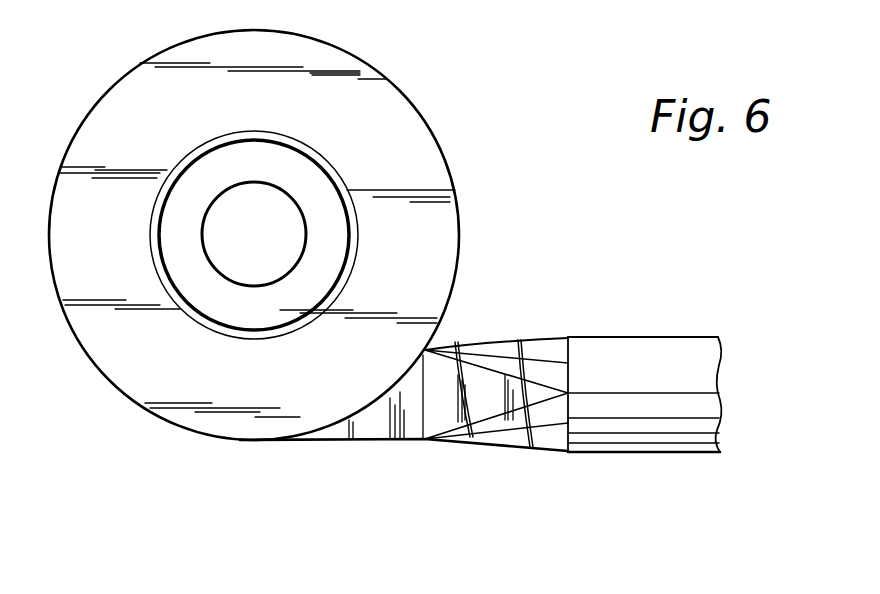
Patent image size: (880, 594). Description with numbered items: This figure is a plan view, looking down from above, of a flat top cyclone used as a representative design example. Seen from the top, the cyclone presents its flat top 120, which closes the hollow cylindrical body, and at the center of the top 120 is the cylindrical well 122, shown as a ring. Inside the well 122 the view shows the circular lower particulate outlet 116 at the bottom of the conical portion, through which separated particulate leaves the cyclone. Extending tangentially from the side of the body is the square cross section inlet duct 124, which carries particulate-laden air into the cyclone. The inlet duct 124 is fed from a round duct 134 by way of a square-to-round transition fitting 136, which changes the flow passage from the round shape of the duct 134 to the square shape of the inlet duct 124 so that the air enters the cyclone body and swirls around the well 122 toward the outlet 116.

The top 120 is at (435, 203).
The cylindrical well 122 is at (287, 147).
The lower particulate outlet 116 is at (297, 208).
The inlet duct 124 is at (382, 422).
The square-to-round transition fitting 136 is at (503, 340).
The round duct 134 is at (637, 337).